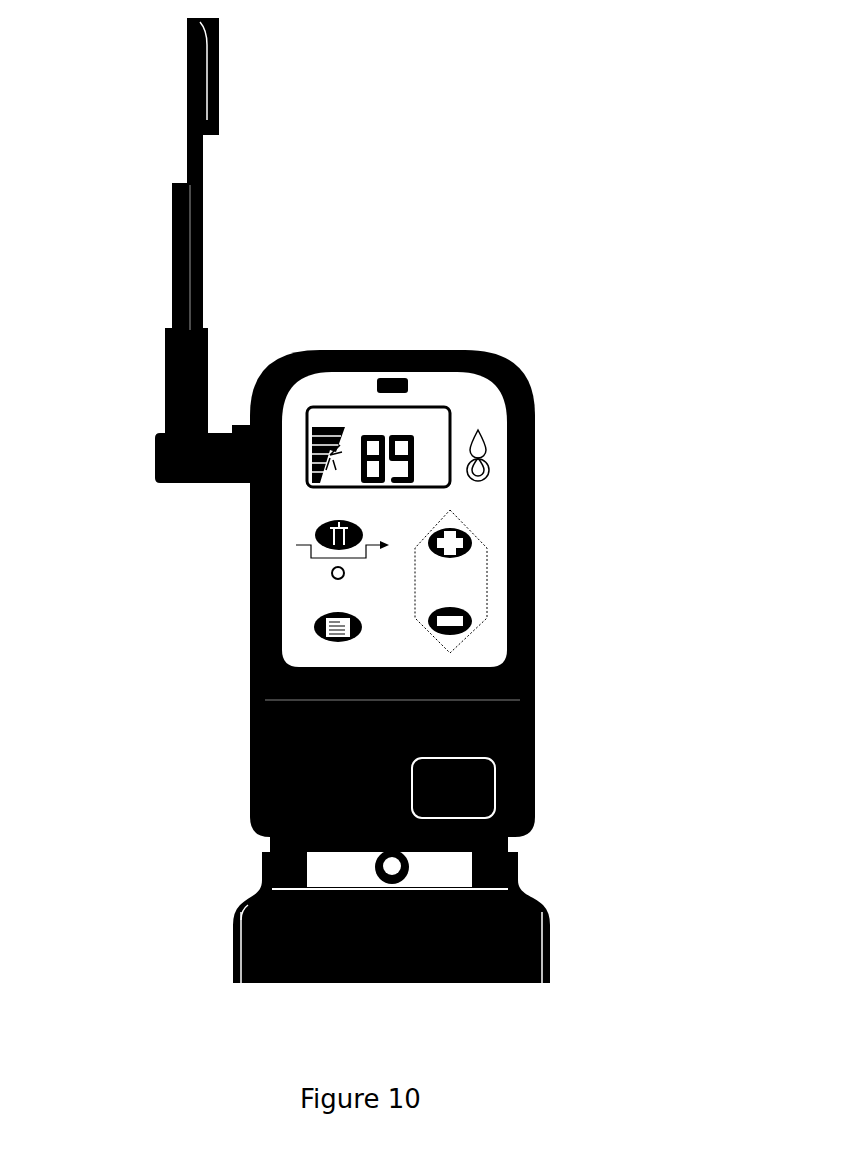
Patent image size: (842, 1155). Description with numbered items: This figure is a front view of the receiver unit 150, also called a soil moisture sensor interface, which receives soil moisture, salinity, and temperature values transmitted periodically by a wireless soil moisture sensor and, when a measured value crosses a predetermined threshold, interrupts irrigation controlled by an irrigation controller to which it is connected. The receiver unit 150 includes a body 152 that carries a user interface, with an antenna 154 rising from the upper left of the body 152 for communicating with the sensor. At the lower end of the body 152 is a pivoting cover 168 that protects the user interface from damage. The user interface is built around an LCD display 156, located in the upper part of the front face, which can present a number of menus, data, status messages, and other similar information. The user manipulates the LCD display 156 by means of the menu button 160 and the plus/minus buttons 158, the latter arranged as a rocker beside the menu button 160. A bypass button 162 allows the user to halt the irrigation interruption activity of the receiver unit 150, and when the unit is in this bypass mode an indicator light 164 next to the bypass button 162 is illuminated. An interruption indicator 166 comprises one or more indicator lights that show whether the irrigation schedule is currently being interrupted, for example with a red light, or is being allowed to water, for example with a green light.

The receiver unit 150 is at (358, 500).
The body 152 is at (542, 497).
The antenna 154 is at (197, 317).
The LCD display 156 is at (447, 407).
The plus/minus buttons 158 is at (498, 575).
The menu button 160 is at (312, 620).
The bypass button 162 is at (312, 532).
The indicator light 164 is at (330, 575).
The interruption indicator 166 is at (518, 398).
The pivoting cover 168 is at (530, 928).